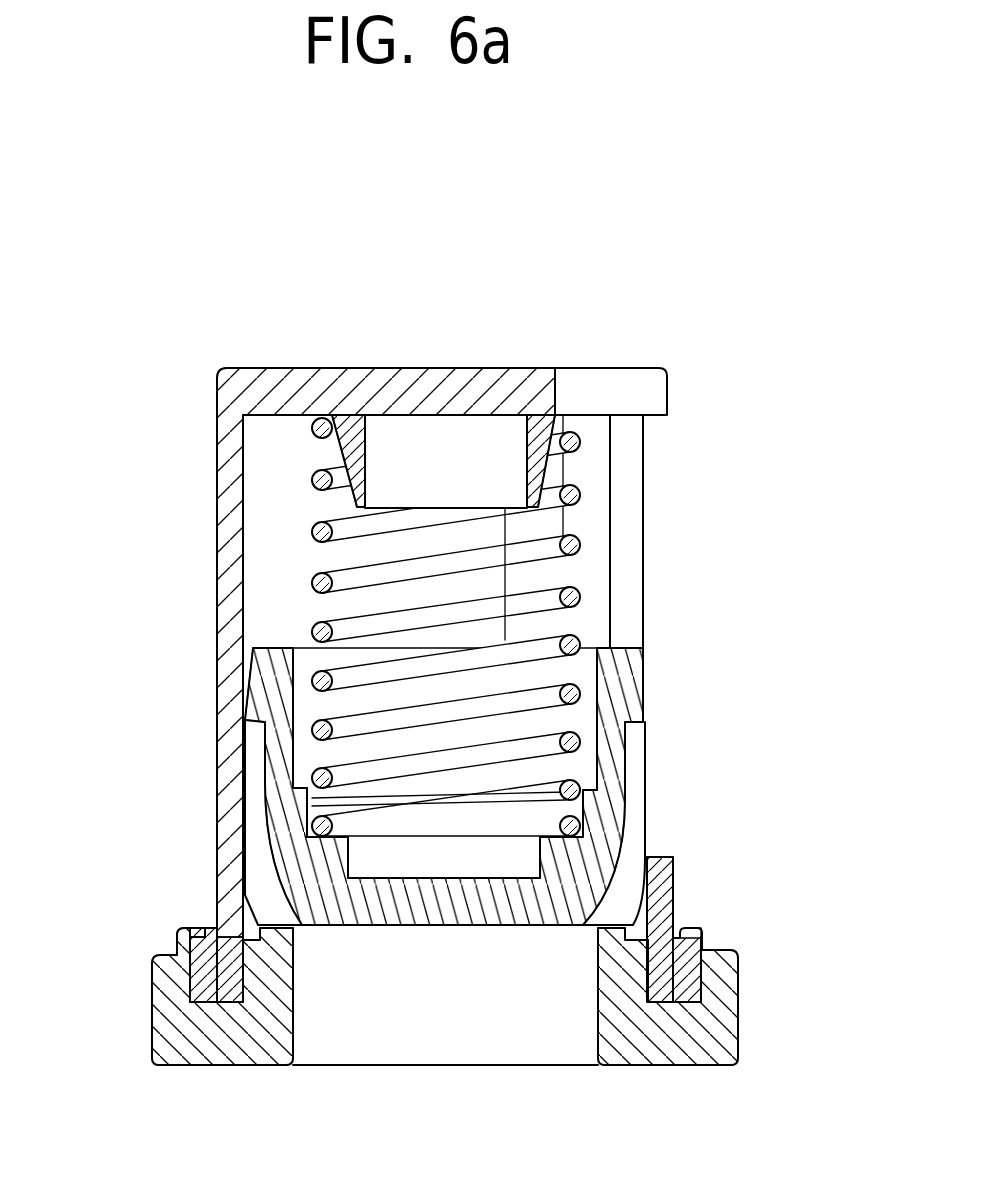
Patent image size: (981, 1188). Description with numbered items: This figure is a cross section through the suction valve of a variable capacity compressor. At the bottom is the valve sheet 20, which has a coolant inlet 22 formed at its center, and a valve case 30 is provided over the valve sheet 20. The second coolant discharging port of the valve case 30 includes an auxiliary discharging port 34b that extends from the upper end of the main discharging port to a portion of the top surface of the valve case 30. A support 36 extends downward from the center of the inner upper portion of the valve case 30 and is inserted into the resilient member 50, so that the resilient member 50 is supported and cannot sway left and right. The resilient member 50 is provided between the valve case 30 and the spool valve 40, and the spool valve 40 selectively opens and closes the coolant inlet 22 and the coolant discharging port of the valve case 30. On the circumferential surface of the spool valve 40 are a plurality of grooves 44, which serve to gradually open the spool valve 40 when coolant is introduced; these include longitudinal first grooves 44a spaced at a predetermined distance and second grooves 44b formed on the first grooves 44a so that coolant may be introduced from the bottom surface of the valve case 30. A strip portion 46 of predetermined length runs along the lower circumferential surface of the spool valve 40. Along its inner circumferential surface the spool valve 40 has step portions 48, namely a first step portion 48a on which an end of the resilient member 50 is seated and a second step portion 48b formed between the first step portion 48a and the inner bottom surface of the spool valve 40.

The valve sheet 20 is at (152, 1028).
The coolant inlet 22 is at (322, 1008).
The valve case 30 is at (222, 514).
The auxiliary discharging port 34b is at (555, 570).
The support 36 is at (343, 450).
The spool valve 40 is at (454, 784).
The grooves 44 is at (533, 822).
The first grooves 44a is at (640, 762).
The second grooves 44b is at (628, 855).
The strip portion 46 is at (217, 912).
The step portions 48 is at (314, 844).
The first step portion 48a is at (313, 830).
The second step portion 48b is at (345, 866).
The resilient member 50 is at (312, 583).